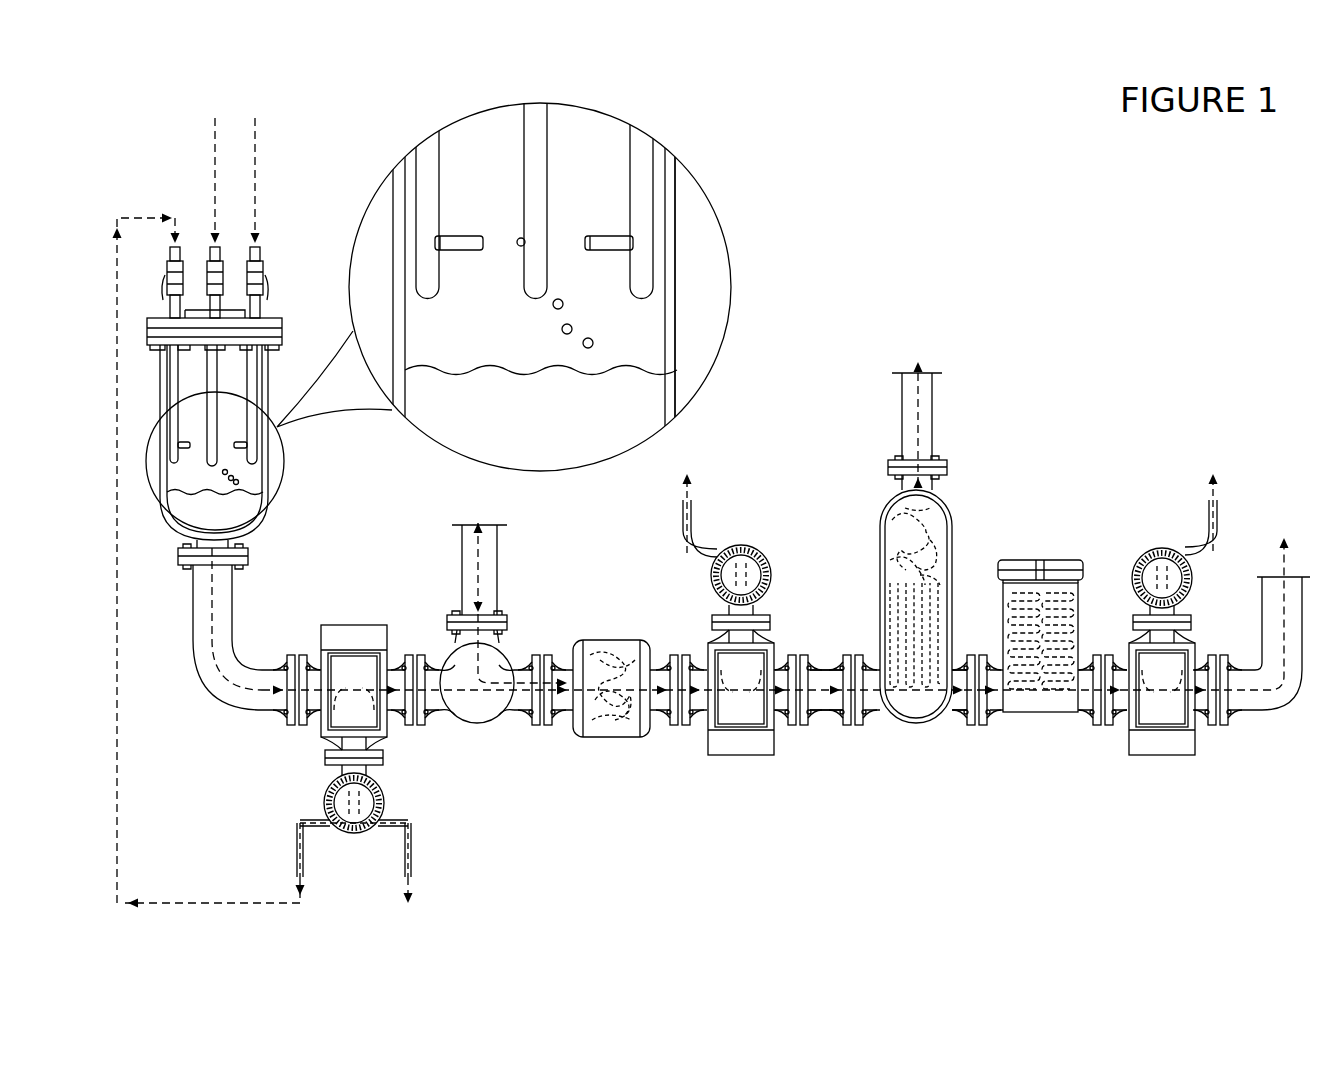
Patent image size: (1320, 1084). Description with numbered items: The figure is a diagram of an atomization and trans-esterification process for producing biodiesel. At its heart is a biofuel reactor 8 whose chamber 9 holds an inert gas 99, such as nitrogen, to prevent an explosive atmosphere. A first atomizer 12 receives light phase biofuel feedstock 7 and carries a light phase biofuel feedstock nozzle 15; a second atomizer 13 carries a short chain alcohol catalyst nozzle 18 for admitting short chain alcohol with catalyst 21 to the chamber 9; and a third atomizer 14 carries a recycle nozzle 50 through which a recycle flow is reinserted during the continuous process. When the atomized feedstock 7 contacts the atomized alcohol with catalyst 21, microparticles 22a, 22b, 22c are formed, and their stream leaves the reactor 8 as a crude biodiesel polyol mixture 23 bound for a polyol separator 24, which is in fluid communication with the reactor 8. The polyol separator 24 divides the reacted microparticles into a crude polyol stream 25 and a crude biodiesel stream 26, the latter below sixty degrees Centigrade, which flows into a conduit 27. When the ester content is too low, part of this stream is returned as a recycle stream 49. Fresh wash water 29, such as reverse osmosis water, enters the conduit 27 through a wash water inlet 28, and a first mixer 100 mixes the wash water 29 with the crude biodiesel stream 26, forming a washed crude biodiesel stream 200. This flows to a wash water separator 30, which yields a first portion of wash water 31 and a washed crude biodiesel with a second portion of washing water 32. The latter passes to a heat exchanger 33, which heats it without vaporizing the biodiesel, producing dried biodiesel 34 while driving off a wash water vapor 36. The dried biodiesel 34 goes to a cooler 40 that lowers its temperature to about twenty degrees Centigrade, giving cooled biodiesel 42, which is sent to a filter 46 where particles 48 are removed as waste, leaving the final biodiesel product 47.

The light phase biofuel feedstock 7 is at (258, 165).
The biofuel reactor 8 is at (165, 385).
The chamber 9 is at (677, 283).
The first atomizer 12 is at (640, 173).
The second atomizer 13 is at (535, 160).
The third atomizer 14 is at (428, 175).
The nozzle 15 is at (608, 242).
The nozzle 18 is at (519, 248).
The short chain alcohol with catalyst 21 is at (210, 165).
The microparticle 22a is at (562, 298).
The microparticle 22b is at (564, 334).
The microparticle 22c is at (591, 337).
The crude biodiesel polyol mixture 23 is at (225, 682).
The polyol separator 24 is at (340, 778).
The crude polyol stream 25 is at (415, 885).
The crude biodiesel stream 26 is at (482, 695).
The conduit 27 is at (468, 723).
The wash water inlet 28 is at (497, 640).
The fresh wash water 29 is at (476, 572).
The wash water separator 30 is at (760, 550).
The first portion of wash water 31 is at (688, 493).
The washed crude biodiesel with a second portion of washing water 32 is at (825, 693).
The heat exchanger 33 is at (893, 497).
The dried biodiesel 34 is at (958, 703).
The wash water vapor 36 is at (950, 507).
The cooler 40 is at (1033, 560).
The cooled biodiesel 42 is at (1142, 690).
The filter 46 is at (1143, 550).
The final biodiesel product 47 is at (1248, 693).
The particles 48 is at (1220, 497).
The recycle stream 49 is at (207, 903).
The recycle nozzle 50 is at (460, 240).
The inert gas 99 is at (422, 330).
The first mixer 100 is at (612, 740).
The washed crude biodiesel stream 200 is at (723, 690).